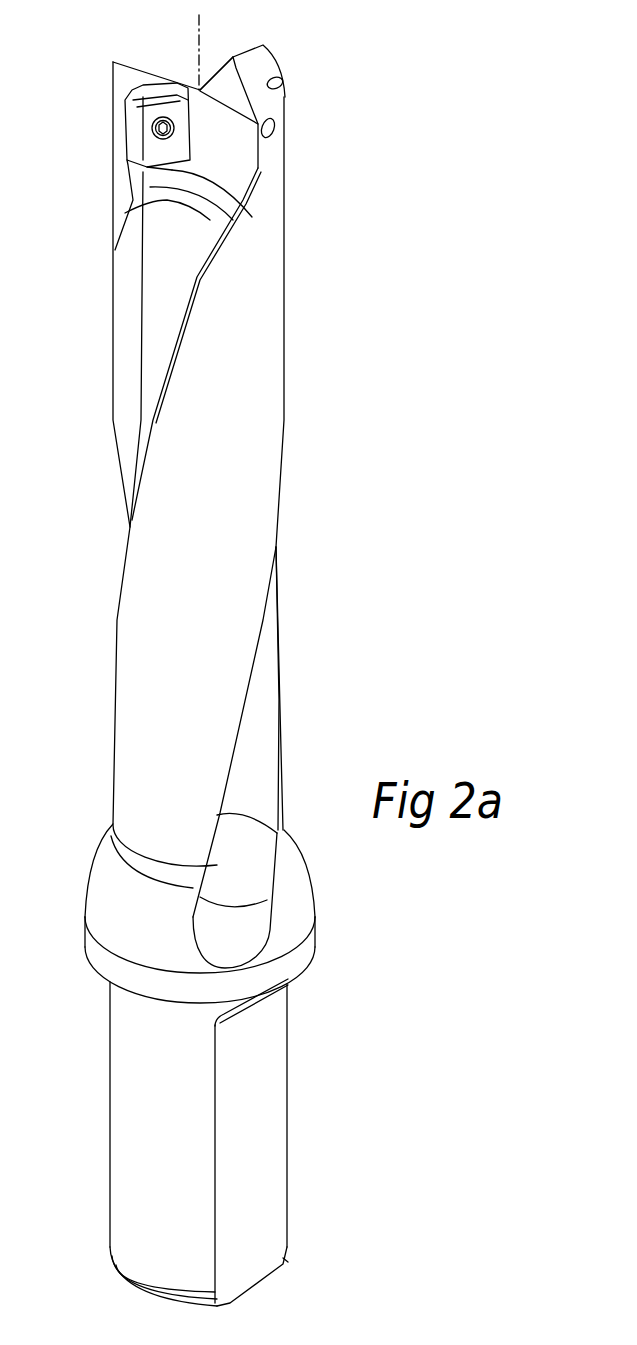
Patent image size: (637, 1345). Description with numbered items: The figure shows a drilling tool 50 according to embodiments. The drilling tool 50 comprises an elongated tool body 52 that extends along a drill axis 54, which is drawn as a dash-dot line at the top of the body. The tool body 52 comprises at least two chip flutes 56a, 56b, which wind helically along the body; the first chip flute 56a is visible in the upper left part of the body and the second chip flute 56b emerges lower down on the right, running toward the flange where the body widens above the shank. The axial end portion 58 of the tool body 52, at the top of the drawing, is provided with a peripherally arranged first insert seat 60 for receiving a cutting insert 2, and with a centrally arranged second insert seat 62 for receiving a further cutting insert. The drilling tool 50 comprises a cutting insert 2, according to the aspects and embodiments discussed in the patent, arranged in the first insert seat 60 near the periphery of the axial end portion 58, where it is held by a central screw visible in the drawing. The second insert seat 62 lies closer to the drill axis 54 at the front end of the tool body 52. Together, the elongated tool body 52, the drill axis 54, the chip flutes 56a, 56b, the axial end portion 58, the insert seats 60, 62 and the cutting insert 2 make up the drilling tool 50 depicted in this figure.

The cutting insert 2 is at (133, 135).
The drilling tool 50 is at (369, 156).
The tool body 52 is at (265, 322).
The drill axis 54 is at (197, 45).
The chip flute 56a is at (150, 306).
The chip flute 56b is at (273, 701).
The axial end portion 58 is at (304, 56).
The first insert seat 60 is at (125, 85).
The second insert seat 62 is at (219, 68).